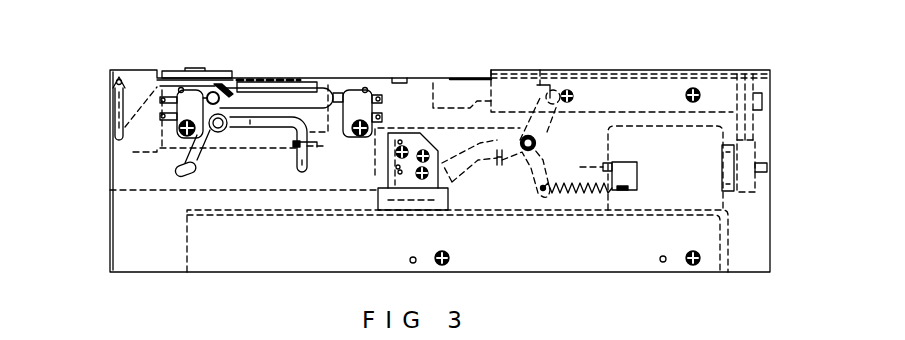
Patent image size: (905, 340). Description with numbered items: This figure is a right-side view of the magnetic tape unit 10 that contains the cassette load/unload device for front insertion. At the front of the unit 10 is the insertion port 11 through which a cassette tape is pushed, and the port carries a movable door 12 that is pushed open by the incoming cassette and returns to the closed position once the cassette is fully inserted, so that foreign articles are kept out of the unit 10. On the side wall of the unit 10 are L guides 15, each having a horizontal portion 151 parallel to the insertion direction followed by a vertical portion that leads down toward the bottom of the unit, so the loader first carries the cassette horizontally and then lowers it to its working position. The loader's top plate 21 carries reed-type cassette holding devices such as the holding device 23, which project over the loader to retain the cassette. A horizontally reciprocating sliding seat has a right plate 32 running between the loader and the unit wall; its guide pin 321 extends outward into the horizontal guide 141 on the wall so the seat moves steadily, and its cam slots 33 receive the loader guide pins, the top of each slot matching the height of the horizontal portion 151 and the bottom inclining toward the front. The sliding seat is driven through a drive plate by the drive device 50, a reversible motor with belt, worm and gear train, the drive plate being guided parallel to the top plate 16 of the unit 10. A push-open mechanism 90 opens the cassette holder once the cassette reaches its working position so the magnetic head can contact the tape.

The magnetic tape unit 10 is at (615, 253).
The insertion port 11 is at (107, 128).
The movable door 12 is at (115, 110).
The L guide 15 is at (297, 118).
The top plate 16 is at (635, 68).
The top plate 21 is at (258, 77).
The cassette holding device 23 is at (228, 85).
The right plate 32 is at (137, 180).
The cam slot 33 is at (186, 172).
The drive device 50 is at (750, 198).
The push-open mechanism 90 is at (494, 176).
The horizontal guide 141 is at (285, 90).
The horizontal portion 151 is at (263, 124).
The guide pin 321 is at (187, 73).